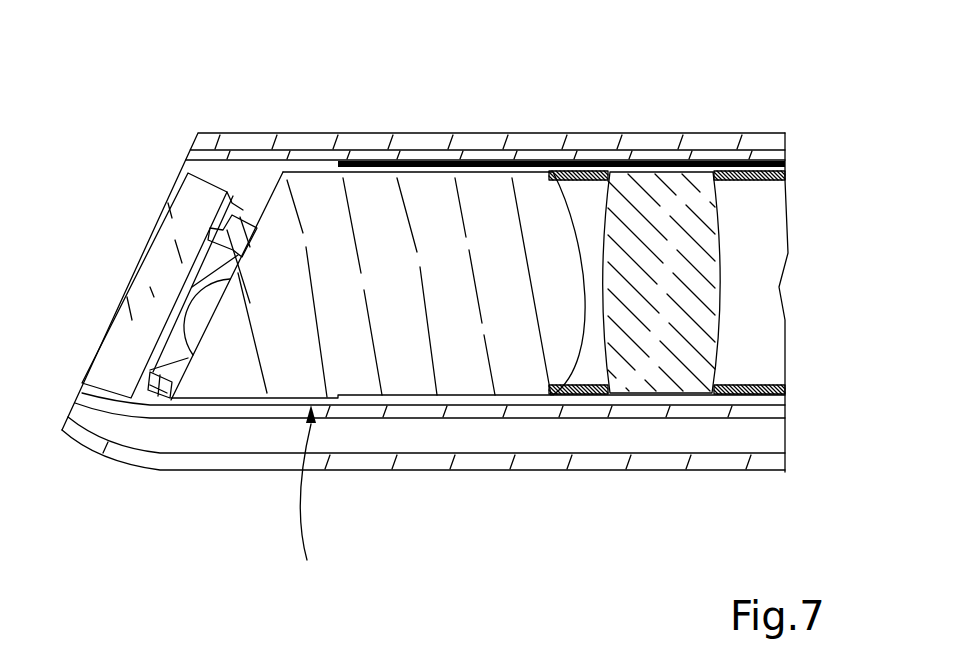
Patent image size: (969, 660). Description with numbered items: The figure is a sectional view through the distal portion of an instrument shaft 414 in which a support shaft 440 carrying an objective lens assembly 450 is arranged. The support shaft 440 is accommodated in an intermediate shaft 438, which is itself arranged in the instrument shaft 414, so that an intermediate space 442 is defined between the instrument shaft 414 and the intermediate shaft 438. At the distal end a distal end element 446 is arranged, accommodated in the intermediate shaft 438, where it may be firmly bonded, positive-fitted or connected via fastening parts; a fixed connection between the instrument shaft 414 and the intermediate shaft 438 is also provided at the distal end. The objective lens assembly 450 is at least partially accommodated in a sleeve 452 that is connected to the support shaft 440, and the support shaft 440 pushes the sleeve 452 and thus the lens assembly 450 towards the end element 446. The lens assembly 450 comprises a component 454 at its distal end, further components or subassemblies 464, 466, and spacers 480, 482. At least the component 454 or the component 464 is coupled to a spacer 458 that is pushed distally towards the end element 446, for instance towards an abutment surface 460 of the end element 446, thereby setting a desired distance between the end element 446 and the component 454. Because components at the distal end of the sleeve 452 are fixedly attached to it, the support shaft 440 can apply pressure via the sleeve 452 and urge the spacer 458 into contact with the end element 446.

The instrument shaft 414 is at (183, 462).
The intermediate shaft 438 is at (420, 404).
The support shaft 440 is at (688, 402).
The intermediate space 442 is at (256, 445).
The distal end element 446 is at (145, 302).
The objective lens assembly 450 is at (321, 496).
The sleeve 452 is at (551, 400).
The component 454 is at (200, 243).
The spacer 458 is at (140, 382).
The abutment surface 460 is at (228, 206).
The component 464 is at (383, 217).
The component 466 is at (697, 212).
The spacer 480 is at (588, 173).
The spacer 482 is at (741, 396).